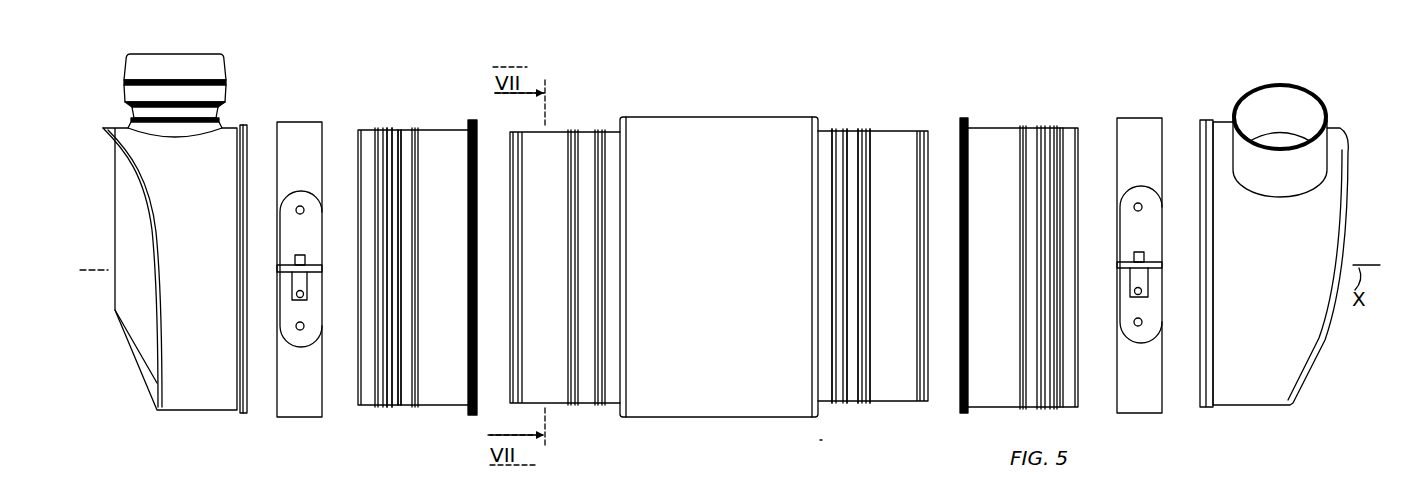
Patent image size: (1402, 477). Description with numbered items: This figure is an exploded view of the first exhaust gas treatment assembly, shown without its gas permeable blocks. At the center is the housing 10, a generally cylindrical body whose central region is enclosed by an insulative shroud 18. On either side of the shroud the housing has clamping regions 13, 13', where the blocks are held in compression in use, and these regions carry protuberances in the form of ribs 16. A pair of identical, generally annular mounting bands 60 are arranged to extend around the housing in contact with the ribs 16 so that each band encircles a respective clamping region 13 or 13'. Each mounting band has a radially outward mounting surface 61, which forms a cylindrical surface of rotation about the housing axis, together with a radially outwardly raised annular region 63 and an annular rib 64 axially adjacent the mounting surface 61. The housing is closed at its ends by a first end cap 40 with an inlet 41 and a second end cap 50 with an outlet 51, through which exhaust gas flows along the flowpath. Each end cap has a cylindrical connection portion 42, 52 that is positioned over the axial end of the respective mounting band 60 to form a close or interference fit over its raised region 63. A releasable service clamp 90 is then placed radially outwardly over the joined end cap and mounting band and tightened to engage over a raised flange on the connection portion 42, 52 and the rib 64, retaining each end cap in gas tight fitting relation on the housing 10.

The housing 10 is at (800, 447).
The clamping region 13 is at (568, 292).
The clamping region 13' is at (873, 292).
The ribs 16 is at (840, 129).
The insulative shroud 18 is at (690, 122).
The first end cap 40 is at (165, 412).
The inlet 41 is at (198, 48).
The cylindrical connection portion 42 is at (246, 416).
The second end cap 50 is at (1243, 407).
The outlet 51 is at (1266, 104).
The cylindrical connection portion 52 is at (1203, 410).
The mounting band 60 is at (402, 430).
The mounting surface 61 is at (446, 420).
The raised annular region 63 is at (394, 108).
The annular rib 64 is at (401, 128).
The releasable service clamp 90 is at (307, 418).